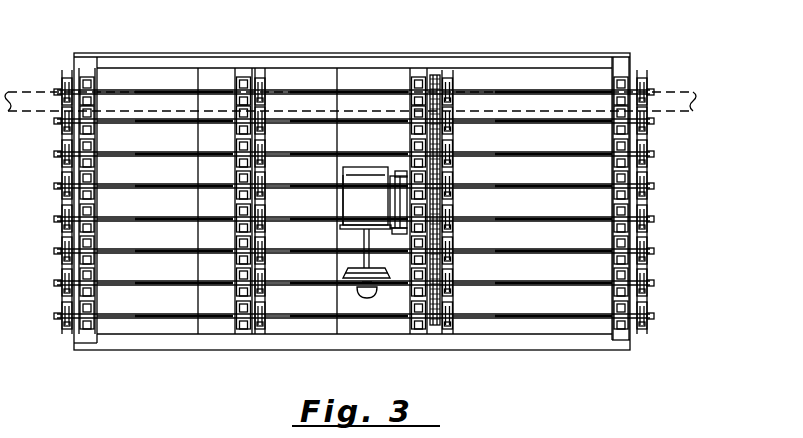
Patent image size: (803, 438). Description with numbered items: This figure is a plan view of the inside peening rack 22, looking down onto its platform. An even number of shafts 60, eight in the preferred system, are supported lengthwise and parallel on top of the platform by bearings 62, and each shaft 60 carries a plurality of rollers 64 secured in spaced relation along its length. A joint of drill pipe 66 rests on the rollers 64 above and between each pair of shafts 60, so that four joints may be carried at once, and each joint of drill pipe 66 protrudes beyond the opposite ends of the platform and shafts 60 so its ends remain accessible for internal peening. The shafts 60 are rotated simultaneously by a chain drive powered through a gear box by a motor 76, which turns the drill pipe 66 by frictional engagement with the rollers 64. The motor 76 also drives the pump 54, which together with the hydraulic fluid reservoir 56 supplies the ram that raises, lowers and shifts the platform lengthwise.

The inside peening rack 22 is at (326, 53).
The pump 54 is at (365, 294).
The hydraulic fluid reservoir 56 is at (208, 197).
The shafts 60 is at (173, 121).
The bearings 62 is at (85, 72).
The rollers 64 is at (66, 70).
The joint of drill pipe 66 is at (678, 95).
The motor 76 is at (353, 197).